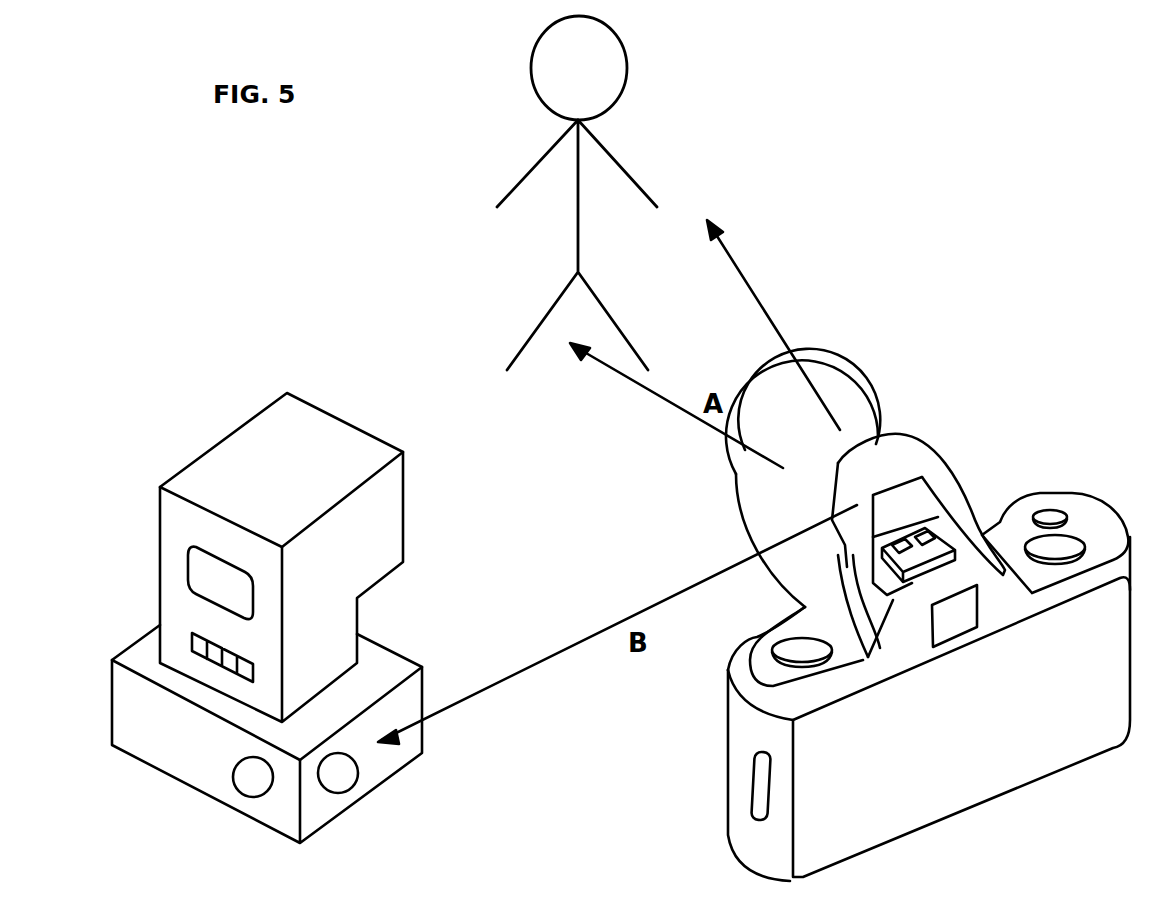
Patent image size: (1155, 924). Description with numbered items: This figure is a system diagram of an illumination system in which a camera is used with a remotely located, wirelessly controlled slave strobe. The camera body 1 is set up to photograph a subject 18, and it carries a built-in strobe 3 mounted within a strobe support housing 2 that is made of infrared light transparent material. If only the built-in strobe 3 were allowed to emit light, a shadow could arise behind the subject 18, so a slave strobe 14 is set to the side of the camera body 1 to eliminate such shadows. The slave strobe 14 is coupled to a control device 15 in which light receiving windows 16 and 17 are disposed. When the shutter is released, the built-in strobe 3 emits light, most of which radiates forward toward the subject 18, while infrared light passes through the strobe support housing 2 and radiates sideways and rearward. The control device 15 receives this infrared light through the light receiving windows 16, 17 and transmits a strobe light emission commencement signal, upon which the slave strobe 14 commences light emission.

The camera body 1 is at (1023, 760).
The strobe support housing 2 is at (921, 522).
The built-in strobe 3 is at (917, 497).
The slave strobe 14 is at (243, 448).
The control device 15 is at (267, 762).
The light receiving window 16 is at (252, 780).
The light receiving window 17 is at (337, 780).
The subject 18 is at (628, 170).